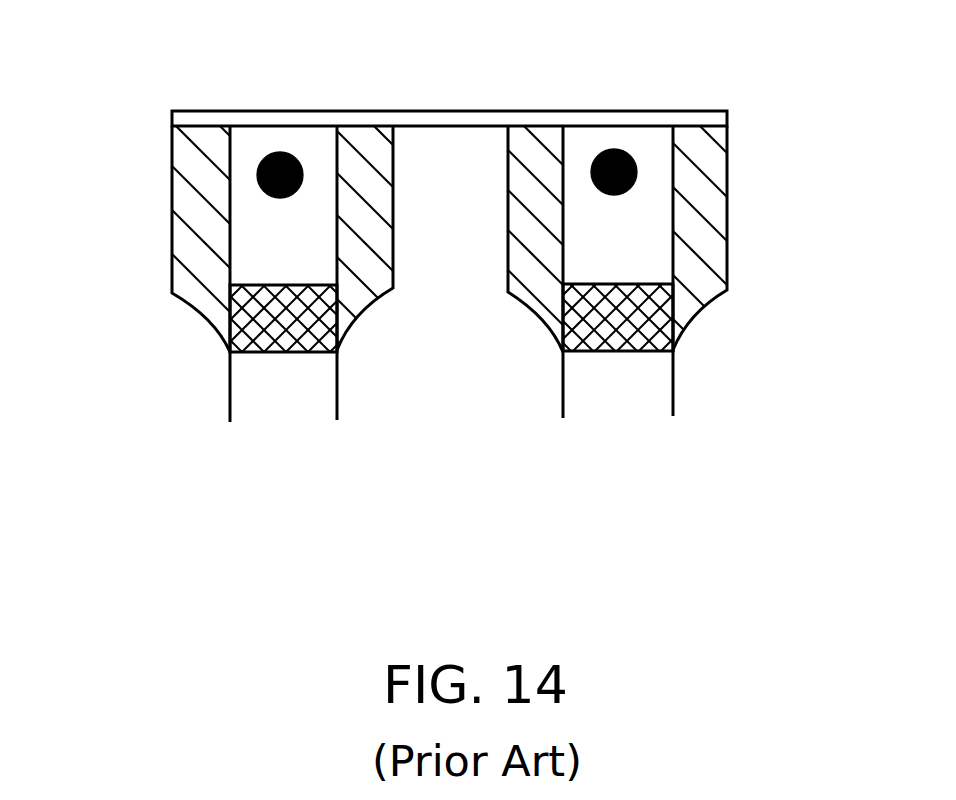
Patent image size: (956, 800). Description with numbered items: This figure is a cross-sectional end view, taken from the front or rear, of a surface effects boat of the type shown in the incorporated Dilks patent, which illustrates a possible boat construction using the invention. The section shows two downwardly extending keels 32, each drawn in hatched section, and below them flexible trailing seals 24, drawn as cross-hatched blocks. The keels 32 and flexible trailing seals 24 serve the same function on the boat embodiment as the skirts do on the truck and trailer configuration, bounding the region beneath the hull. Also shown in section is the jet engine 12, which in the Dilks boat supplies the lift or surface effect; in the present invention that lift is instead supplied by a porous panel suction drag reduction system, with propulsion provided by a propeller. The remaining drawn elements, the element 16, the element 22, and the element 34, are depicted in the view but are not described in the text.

The optical fiber 12 is at (280, 152).
The substrate 16 is at (467, 110).
The cavity 22 is at (262, 270).
The adhesive block 24 is at (303, 355).
The wall 32 is at (178, 217).
The leg 34 is at (228, 390).